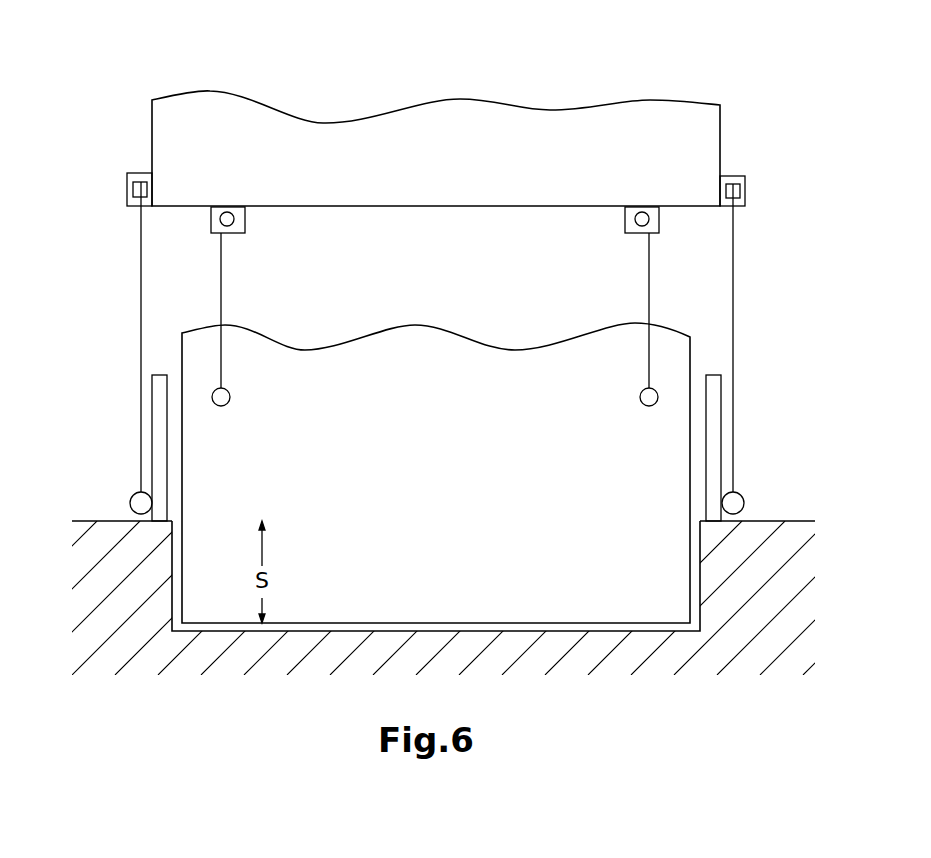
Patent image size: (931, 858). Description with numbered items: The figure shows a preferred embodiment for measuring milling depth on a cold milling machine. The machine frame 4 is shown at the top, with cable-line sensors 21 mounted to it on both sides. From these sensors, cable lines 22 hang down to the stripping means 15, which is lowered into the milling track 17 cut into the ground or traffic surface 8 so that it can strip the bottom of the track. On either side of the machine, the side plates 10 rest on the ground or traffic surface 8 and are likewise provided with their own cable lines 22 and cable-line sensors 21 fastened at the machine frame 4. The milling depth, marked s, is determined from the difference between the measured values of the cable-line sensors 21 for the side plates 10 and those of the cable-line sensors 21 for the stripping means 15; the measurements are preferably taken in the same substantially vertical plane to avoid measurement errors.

The machine frame 4 is at (207, 120).
The cable-line sensor 21 is at (133, 192).
The cable line 22 is at (141, 265).
The side plate 10 is at (160, 438).
The stripping plate 15 is at (443, 594).
The milling track 17 is at (545, 605).
The ground or traffic surface 8 is at (762, 521).